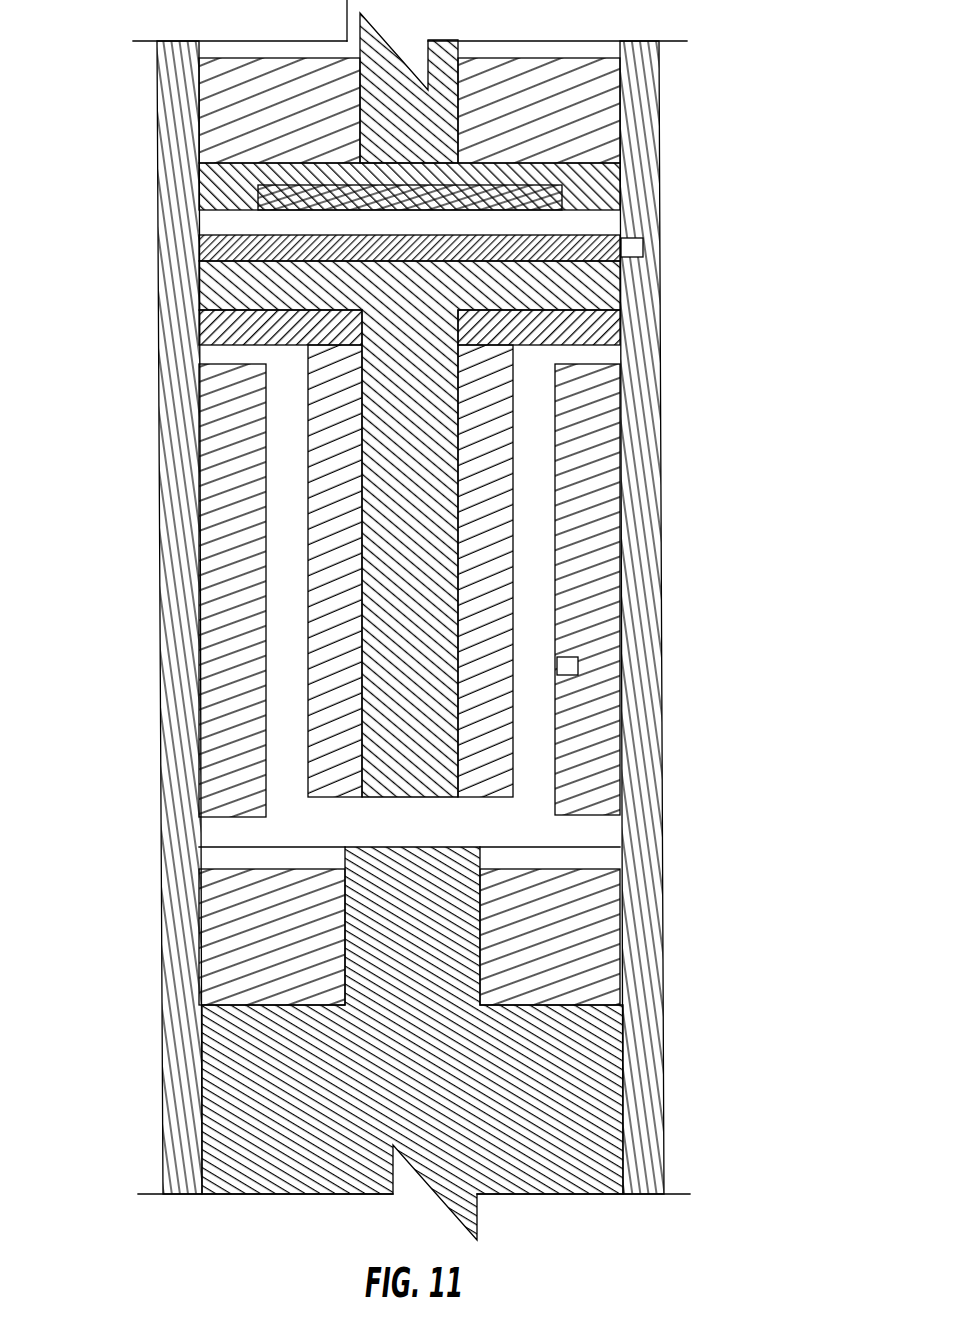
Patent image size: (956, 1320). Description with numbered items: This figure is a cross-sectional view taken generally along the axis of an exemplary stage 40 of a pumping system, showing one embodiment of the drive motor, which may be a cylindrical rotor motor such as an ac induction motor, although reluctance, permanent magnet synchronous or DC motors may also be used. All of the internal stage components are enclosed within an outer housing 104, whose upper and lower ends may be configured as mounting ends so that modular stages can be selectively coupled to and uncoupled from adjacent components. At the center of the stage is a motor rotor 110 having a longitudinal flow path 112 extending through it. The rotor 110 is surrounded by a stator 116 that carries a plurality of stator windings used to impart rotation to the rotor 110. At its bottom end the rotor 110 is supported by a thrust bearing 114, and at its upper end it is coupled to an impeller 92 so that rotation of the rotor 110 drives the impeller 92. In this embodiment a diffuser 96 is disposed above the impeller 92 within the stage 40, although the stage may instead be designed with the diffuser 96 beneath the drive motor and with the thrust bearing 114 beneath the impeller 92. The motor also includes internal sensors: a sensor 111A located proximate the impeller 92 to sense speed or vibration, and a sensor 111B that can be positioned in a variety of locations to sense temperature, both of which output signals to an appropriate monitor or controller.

The stage 40 is at (622, 462).
The impeller 92 is at (577, 342).
The diffuser 96 is at (620, 108).
The outer housing 104 is at (161, 717).
The motor rotor 110 is at (515, 508).
The sensor 111A is at (643, 247).
The sensor 111B is at (580, 666).
The longitudinal flow path 112 is at (437, 680).
The thrust bearing 114 is at (548, 857).
The stator 116 is at (202, 538).